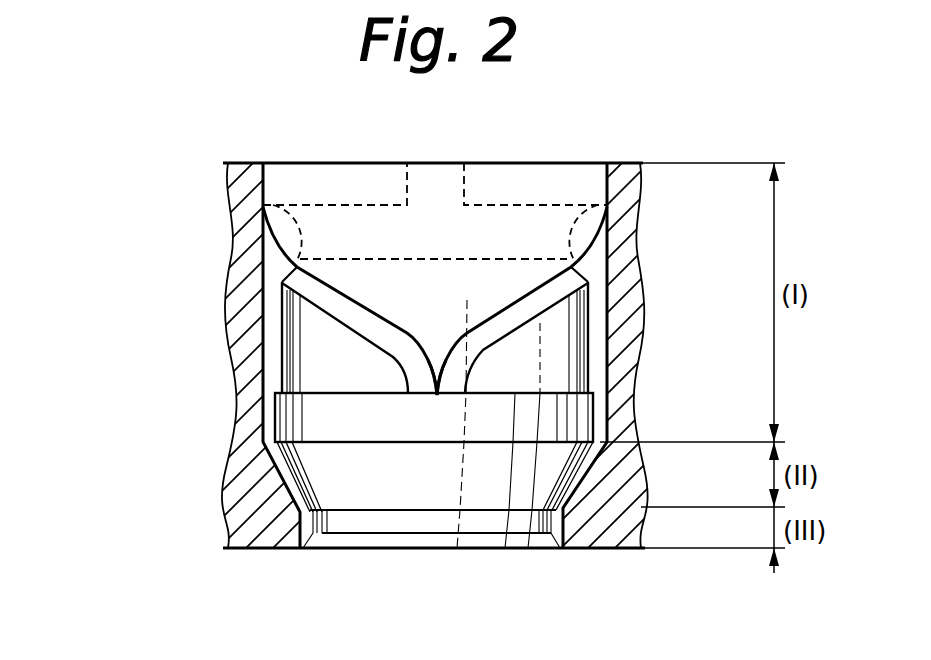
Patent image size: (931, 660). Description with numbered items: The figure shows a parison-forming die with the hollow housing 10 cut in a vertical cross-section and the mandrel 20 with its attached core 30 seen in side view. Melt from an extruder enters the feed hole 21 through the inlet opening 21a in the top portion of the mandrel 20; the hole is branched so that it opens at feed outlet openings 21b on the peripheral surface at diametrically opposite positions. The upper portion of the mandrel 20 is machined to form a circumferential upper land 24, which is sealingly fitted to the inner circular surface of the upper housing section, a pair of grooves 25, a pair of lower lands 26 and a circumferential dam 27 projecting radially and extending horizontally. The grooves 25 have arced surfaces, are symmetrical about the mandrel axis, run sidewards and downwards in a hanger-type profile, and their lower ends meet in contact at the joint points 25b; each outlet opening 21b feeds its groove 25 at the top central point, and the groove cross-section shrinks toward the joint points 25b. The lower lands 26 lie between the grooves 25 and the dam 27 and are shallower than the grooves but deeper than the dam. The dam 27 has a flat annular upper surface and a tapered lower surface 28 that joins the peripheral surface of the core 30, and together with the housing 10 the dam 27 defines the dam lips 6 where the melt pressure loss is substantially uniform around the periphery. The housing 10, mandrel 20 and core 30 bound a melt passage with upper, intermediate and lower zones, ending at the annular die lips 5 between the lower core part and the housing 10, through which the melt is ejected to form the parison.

The die lips 5 is at (298, 550).
The dam lips 6 is at (270, 413).
The hollow housing 10 is at (240, 243).
The mandrel 20 is at (307, 180).
The feed hole 21 is at (518, 220).
The inlet opening 21a is at (438, 161).
The feed outlet openings 21b is at (573, 222).
The upper land 24 is at (495, 289).
The grooves 25 is at (337, 318).
The joint points 25b is at (433, 402).
The lower lands 26 is at (305, 365).
The dam 27 is at (578, 412).
The tapered lower surface 28 is at (612, 484).
The core 30 is at (560, 521).